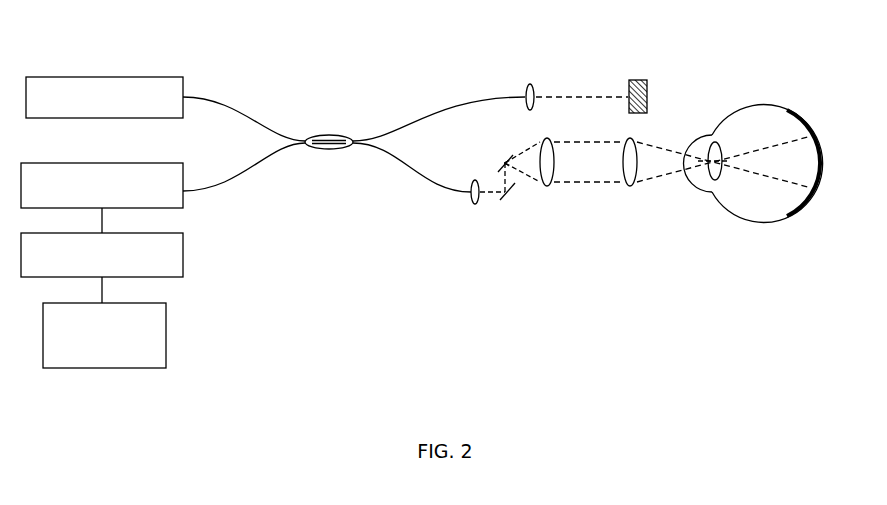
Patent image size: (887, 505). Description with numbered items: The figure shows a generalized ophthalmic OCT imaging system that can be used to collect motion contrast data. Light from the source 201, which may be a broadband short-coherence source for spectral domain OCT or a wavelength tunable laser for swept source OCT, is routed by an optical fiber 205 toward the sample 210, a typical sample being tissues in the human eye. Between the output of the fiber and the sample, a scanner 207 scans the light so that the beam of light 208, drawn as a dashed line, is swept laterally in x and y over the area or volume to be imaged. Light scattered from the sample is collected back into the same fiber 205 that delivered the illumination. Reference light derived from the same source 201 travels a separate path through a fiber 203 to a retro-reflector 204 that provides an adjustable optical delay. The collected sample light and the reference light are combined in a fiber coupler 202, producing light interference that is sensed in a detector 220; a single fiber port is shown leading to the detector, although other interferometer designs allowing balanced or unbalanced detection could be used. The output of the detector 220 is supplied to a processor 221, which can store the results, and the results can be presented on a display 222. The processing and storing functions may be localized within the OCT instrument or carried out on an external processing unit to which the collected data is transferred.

The light source 201 is at (102, 75).
The detector 220 is at (190, 170).
The processor 221 is at (190, 257).
The display 222 is at (173, 338).
The fiber coupler 202 is at (323, 148).
The fiber 203 is at (440, 105).
The optical fiber 205 is at (422, 192).
The retro-reflector 204 is at (643, 70).
The scanner 207 is at (520, 202).
The beam of light 208 is at (760, 183).
The sample 210 is at (783, 103).